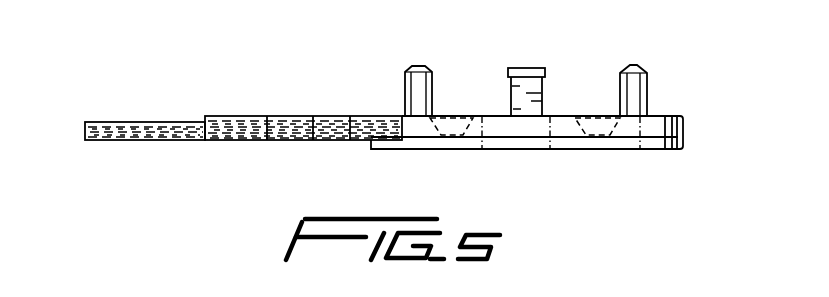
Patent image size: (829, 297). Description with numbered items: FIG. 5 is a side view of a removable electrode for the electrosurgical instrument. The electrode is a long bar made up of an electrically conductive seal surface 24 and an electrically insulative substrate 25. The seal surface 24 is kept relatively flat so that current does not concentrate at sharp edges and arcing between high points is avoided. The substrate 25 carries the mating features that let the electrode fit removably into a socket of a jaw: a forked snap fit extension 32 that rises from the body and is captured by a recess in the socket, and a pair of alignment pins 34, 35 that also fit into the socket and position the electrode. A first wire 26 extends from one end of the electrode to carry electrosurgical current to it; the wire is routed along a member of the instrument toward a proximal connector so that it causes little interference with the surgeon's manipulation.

The seal surface 24 is at (617, 146).
The substrate 25 is at (663, 113).
The first wire 26 is at (113, 122).
The forked snap fit extension 32 is at (528, 67).
The alignment pin 34 is at (632, 67).
The alignment pin 35 is at (418, 67).